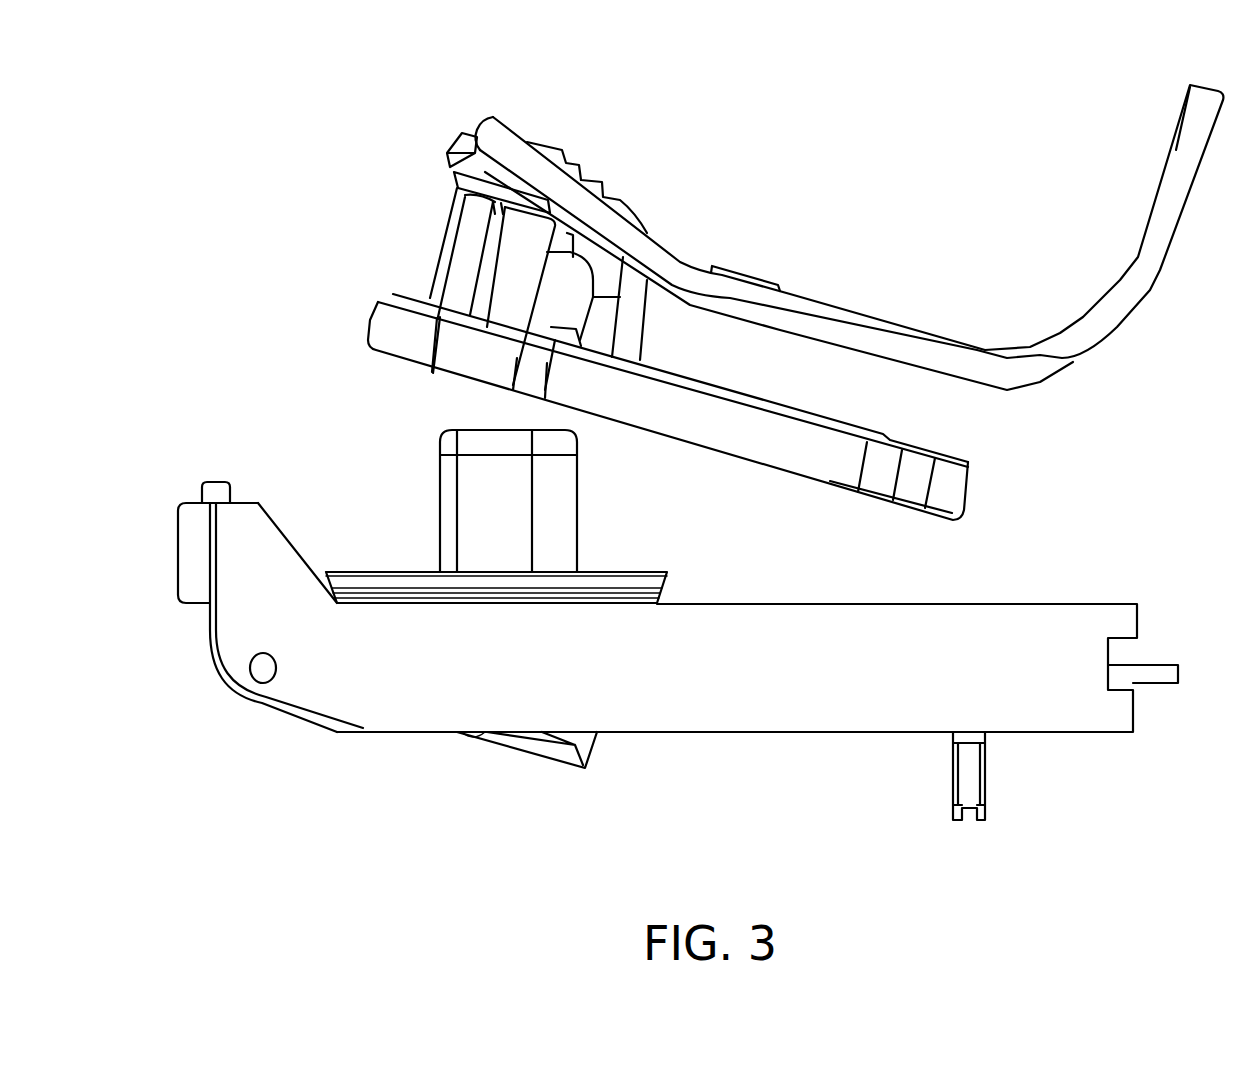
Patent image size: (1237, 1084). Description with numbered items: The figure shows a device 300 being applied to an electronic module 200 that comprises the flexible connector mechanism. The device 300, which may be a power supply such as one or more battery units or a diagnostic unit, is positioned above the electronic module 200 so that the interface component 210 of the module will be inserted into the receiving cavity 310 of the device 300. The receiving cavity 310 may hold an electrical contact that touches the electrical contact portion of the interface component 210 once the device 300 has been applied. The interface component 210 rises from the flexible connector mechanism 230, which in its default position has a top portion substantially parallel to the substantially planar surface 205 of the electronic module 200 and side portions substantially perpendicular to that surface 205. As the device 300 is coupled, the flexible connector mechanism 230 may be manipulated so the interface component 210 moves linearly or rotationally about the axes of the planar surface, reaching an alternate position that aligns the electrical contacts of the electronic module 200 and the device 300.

The electronic module 200 is at (691, 639).
The substantially planar surface 205 is at (1075, 591).
The interface component 210 is at (578, 497).
The flexible connector mechanism 230 is at (665, 589).
The device 300 is at (716, 279).
The receiving cavity 310 is at (510, 273).